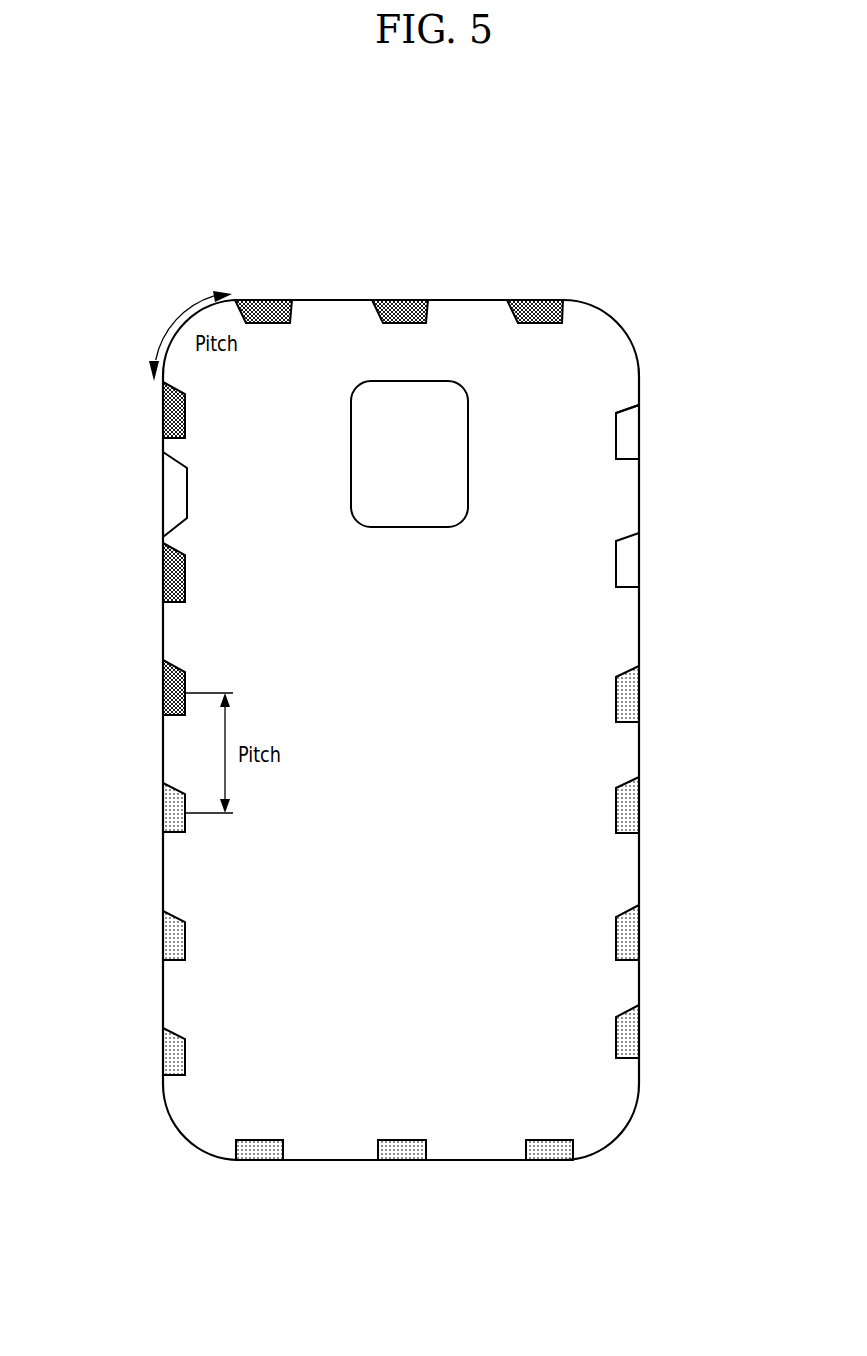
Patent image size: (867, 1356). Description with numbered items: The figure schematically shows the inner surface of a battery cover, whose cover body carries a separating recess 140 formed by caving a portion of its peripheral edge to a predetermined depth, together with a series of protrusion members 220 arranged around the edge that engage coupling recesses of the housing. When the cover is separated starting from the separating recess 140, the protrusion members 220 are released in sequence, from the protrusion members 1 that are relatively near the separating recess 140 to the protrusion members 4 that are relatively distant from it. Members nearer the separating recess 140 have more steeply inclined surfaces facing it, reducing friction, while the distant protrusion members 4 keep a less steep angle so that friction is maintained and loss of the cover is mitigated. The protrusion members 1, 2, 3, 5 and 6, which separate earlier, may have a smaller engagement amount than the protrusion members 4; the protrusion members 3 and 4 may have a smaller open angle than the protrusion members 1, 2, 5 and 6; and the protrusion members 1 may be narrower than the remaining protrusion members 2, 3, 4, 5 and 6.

The protrusion members 1 is at (176, 688).
The protrusion members 2 is at (172, 1050).
The protrusion members 3 is at (626, 563).
The protrusion members 4 is at (629, 1038).
The protrusion members 5 is at (526, 1160).
The protrusion members 6 is at (530, 305).
The separating recess 140 is at (178, 490).
The protrusion members 220 is at (632, 420).